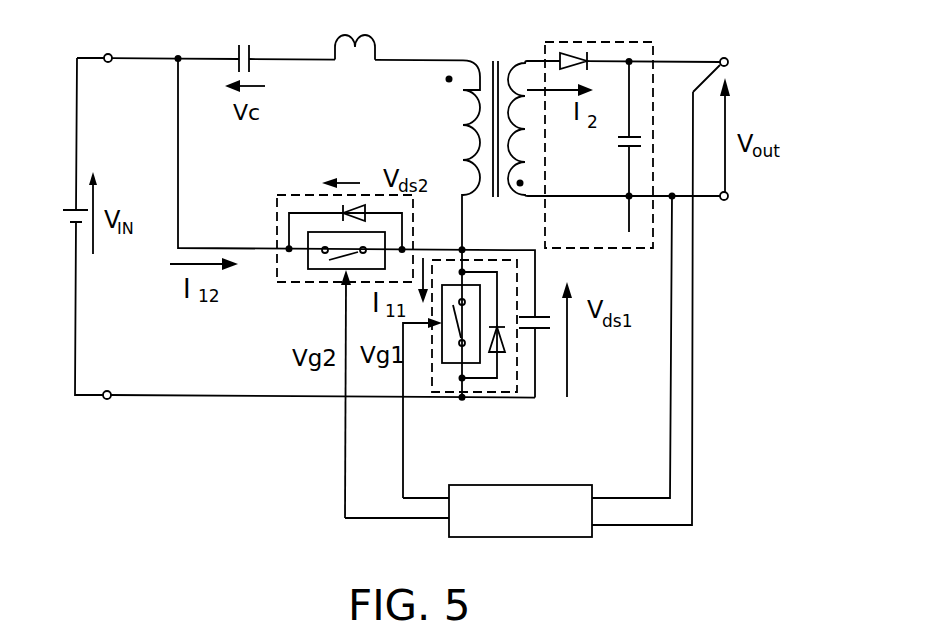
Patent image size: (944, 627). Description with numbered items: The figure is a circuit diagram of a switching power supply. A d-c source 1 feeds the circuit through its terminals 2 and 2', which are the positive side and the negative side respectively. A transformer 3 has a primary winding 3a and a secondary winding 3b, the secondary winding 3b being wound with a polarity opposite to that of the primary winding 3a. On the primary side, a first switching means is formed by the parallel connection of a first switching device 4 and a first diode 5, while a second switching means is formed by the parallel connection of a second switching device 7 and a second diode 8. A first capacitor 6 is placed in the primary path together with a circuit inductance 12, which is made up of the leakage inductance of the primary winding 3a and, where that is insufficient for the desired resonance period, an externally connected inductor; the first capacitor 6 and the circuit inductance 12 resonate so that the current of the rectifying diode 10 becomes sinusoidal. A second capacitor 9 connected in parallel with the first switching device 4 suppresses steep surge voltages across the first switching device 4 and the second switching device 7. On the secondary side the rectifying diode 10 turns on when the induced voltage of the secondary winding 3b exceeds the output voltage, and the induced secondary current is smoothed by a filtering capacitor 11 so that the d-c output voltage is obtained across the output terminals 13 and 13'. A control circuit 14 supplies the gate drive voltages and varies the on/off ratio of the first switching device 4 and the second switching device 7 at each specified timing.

The d-c source 1 is at (70, 217).
The terminal 2 is at (99, 37).
The terminal 2' is at (102, 419).
The transformer 3 is at (496, 72).
The primary winding 3a is at (463, 139).
The secondary winding 3b is at (525, 115).
The first switching device 4 is at (452, 364).
The first diode 5 is at (503, 348).
The first capacitor 6 is at (246, 44).
The second switching device 7 is at (307, 263).
The second diode 8 is at (352, 204).
The second capacitor 9 is at (552, 323).
The rectifying diode 10 is at (567, 52).
The filtering capacitor 11 is at (616, 143).
The circuit inductance 12 is at (360, 50).
The output terminal 13 is at (735, 35).
The output terminal 13' is at (733, 223).
The control circuit 14 is at (537, 538).